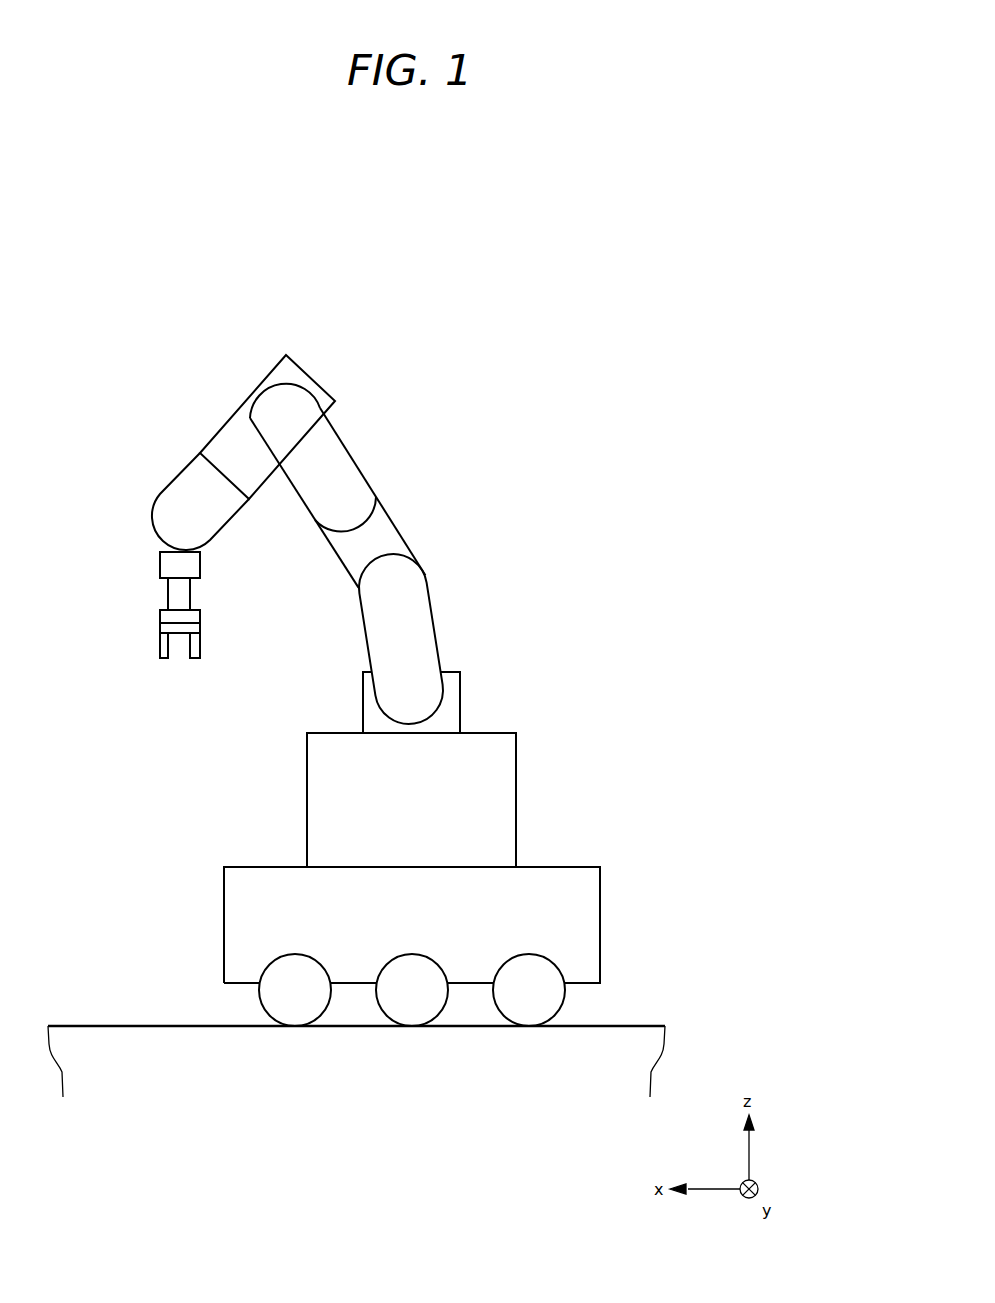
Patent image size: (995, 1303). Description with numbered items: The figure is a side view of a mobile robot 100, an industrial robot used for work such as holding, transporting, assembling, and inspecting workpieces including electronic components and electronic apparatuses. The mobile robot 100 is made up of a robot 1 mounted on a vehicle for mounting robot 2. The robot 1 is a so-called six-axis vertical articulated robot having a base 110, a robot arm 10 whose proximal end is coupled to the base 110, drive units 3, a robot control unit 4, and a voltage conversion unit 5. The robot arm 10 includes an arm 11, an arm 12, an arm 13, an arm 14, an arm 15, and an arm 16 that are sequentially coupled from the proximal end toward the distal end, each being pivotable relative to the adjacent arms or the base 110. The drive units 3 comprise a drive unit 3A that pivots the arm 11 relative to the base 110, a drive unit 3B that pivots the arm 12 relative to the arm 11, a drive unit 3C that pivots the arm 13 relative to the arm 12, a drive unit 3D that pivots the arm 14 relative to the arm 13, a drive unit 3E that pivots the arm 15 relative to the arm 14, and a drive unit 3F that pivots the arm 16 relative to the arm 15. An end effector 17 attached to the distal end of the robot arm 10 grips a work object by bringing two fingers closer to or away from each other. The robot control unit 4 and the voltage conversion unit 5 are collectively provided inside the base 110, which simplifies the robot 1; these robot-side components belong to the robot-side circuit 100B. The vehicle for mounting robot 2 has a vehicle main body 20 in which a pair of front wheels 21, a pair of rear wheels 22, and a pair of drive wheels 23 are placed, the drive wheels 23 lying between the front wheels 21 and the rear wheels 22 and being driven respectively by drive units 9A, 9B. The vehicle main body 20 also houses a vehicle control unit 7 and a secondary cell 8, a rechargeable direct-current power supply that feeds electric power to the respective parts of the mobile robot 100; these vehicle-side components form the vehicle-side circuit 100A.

The mobile robot 100 is at (497, 215).
The robot 1 is at (362, 292).
The robot arm 10 is at (305, 366).
The drive units 3 is at (331, 553).
The drive unit 3A is at (420, 770).
The drive unit 3B is at (397, 613).
The drive unit 3C is at (363, 543).
The drive unit 3D is at (312, 443).
The drive unit 3E is at (247, 453).
The drive unit 3F is at (180, 527).
The arm 11 is at (415, 653).
The arm 12 is at (388, 547).
The arm 13 is at (340, 465).
The arm 14 is at (226, 456).
The arm 15 is at (200, 500).
The arm 16 is at (182, 563).
The end effector 17 is at (182, 628).
The base 110 is at (516, 778).
The voltage conversion unit 5 is at (483, 847).
The robot control unit 4 is at (373, 830).
The robot-side circuit 100B is at (373, 788).
The vehicle for mounting robot 2 is at (600, 928).
The vehicle main body 20 is at (224, 883).
The secondary cell 8 is at (270, 914).
The vehicle control unit 7 is at (272, 943).
The vehicle-side circuit 100A is at (547, 903).
The drive unit 9A is at (649, 966).
The drive unit 9B is at (553, 947).
The front wheels 21 is at (295, 1008).
The rear wheels 22 is at (529, 1008).
The drive wheels 23 is at (412, 1008).